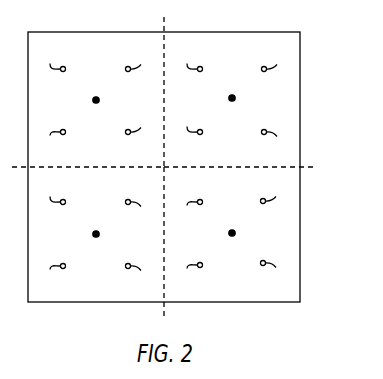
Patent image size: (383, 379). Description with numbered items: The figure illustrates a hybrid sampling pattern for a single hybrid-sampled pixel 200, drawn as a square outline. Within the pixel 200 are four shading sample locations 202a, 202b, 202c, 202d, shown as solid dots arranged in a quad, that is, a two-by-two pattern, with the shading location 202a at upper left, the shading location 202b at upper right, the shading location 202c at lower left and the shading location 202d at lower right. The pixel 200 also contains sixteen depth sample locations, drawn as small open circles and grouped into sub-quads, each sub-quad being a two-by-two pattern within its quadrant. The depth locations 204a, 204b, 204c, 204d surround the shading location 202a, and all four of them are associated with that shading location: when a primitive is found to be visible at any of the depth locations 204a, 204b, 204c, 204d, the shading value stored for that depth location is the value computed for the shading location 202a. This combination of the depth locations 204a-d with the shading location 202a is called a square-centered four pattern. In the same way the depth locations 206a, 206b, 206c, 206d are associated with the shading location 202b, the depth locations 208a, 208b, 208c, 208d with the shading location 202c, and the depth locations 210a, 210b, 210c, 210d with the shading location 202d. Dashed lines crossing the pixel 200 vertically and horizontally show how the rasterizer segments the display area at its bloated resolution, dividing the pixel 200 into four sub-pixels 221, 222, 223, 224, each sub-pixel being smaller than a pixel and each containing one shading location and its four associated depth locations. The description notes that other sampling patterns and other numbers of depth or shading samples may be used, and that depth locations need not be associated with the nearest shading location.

The hybrid-sampled pixel 200 is at (300, 82).
The shading sample location 202a is at (93, 101).
The shading sample location 202b is at (235, 99).
The shading sample location 202c is at (93, 235).
The shading sample location 202d is at (235, 234).
The depth sample location 204a is at (53, 57).
The depth sample location 204b is at (144, 57).
The depth sample location 204c is at (53, 146).
The depth sample location 204d is at (144, 119).
The depth sample location 206a is at (188, 57).
The depth sample location 206b is at (280, 57).
The depth sample location 206c is at (188, 119).
The depth sample location 206d is at (280, 146).
The depth sample location 208a is at (53, 191).
The depth sample location 208b is at (144, 215).
The depth sample location 208c is at (53, 280).
The depth sample location 208d is at (144, 280).
The depth sample location 210a is at (188, 215).
The depth sample location 210b is at (279, 191).
The depth sample location 210c is at (188, 280).
The depth sample location 210d is at (279, 279).
The sub-pixel 221 is at (154, 159).
The sub-pixel 222 is at (201, 159).
The sub-pixel 223 is at (154, 194).
The sub-pixel 224 is at (201, 194).